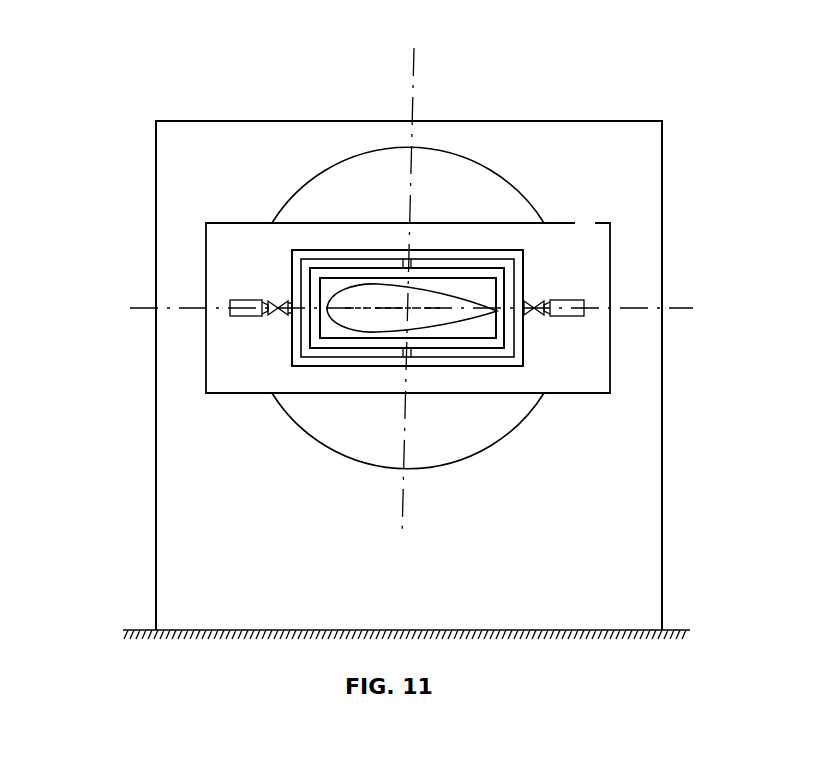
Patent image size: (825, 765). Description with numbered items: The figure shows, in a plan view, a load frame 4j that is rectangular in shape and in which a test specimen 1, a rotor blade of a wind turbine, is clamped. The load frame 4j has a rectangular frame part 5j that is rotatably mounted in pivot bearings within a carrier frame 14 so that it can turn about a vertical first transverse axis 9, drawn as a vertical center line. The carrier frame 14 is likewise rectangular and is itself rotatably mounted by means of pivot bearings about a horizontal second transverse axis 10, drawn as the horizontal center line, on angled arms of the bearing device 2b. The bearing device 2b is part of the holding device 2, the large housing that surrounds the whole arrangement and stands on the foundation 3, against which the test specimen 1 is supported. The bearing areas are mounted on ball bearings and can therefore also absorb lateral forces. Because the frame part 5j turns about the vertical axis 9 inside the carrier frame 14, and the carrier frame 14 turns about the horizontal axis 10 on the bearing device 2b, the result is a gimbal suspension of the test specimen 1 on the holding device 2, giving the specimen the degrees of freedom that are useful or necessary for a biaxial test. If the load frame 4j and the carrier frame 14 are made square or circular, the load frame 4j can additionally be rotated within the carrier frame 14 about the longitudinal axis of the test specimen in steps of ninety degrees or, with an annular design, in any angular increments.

The test specimen 1 is at (442, 302).
The holding device 2 is at (306, 121).
The bearing device 2b is at (548, 273).
The foundation 3 is at (150, 630).
The load frame 4j is at (482, 340).
The frame part 5j is at (357, 348).
The first transverse axis 9 is at (419, 72).
The second transverse axis 10 is at (700, 309).
The carrier frame 14 is at (443, 366).